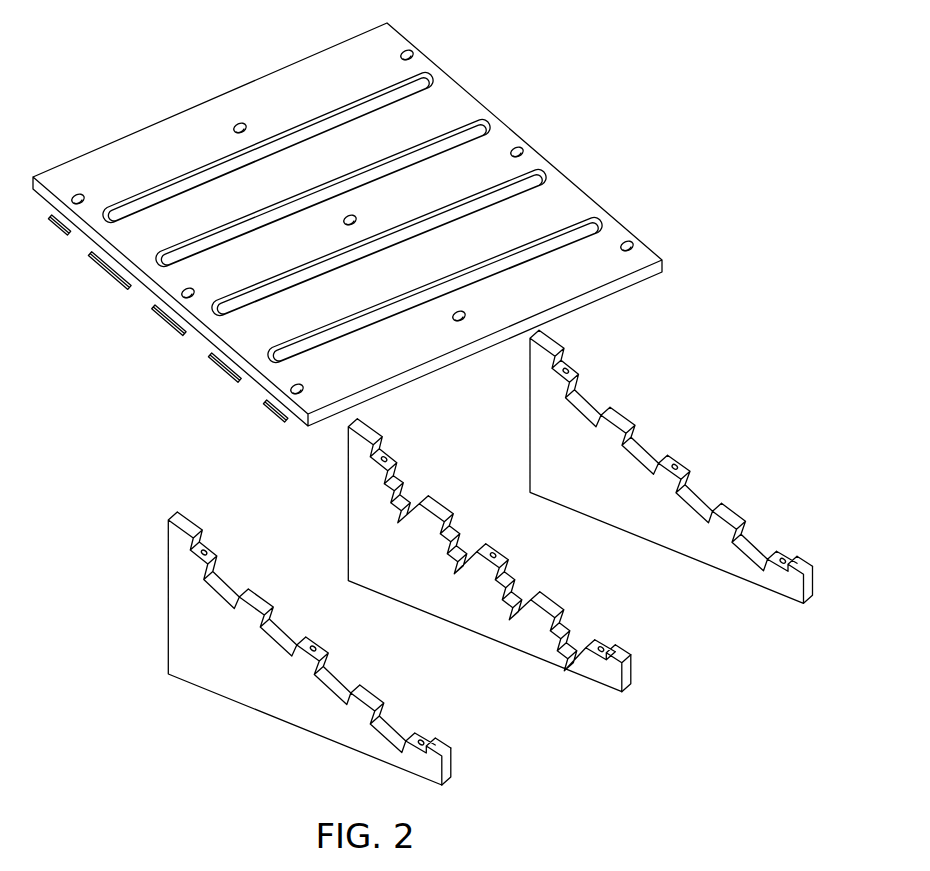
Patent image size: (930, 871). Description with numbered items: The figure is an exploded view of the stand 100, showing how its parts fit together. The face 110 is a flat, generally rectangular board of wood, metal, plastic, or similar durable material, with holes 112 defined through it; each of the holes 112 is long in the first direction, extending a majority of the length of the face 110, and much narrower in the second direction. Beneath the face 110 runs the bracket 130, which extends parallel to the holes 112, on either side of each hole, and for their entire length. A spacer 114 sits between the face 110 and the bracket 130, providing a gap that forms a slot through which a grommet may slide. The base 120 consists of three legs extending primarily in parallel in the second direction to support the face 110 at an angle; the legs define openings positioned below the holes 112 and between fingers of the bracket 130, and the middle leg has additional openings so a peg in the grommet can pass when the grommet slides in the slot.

The stand 100 is at (345, 221).
The face 110 is at (238, 198).
The holes 112 is at (293, 138).
The spacer 114 is at (104, 267).
The base 120 is at (290, 653).
The bracket 130 is at (222, 367).